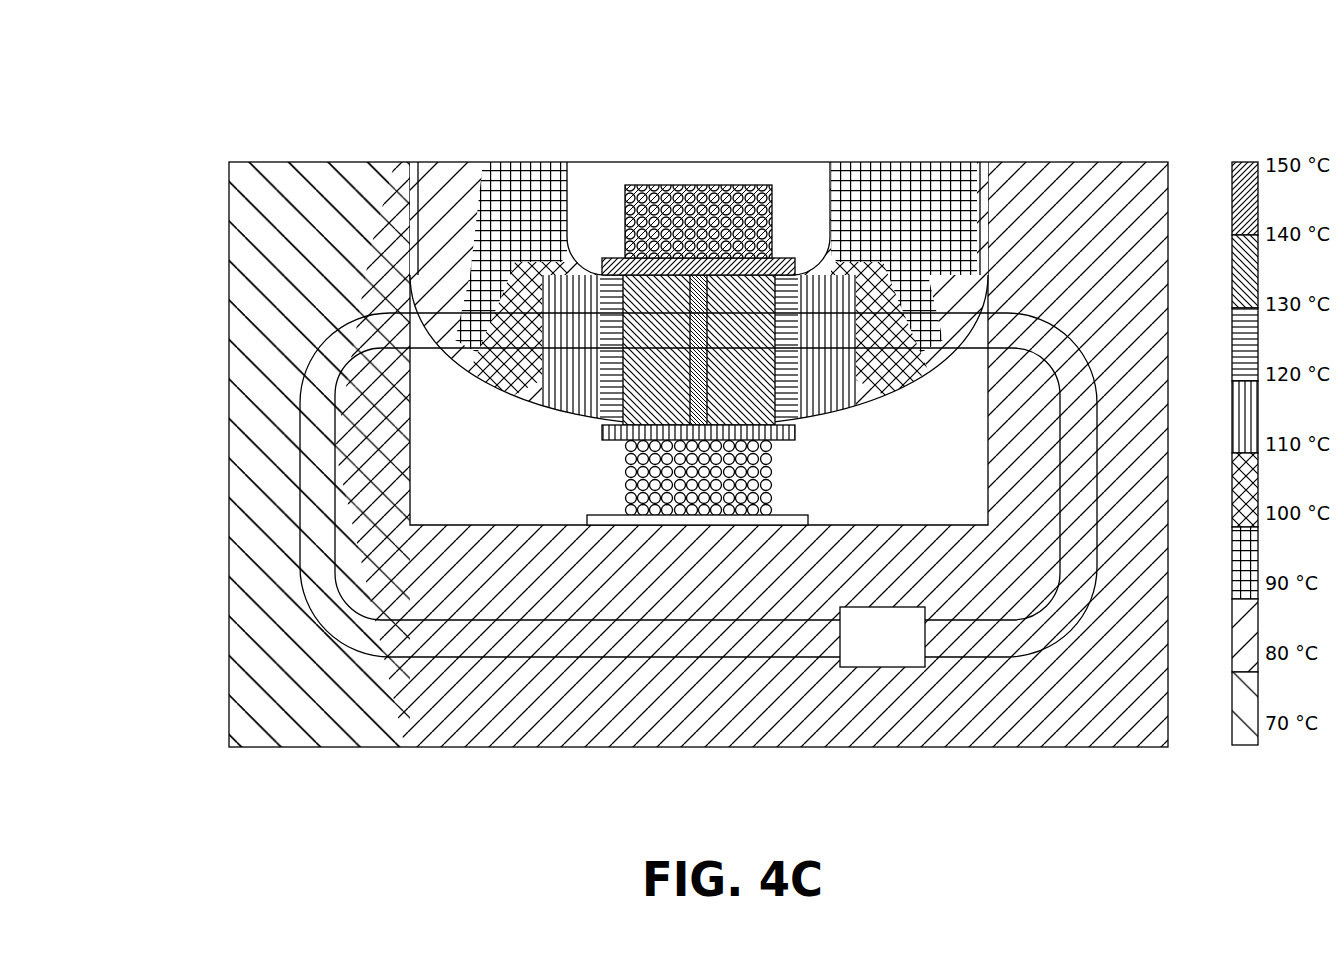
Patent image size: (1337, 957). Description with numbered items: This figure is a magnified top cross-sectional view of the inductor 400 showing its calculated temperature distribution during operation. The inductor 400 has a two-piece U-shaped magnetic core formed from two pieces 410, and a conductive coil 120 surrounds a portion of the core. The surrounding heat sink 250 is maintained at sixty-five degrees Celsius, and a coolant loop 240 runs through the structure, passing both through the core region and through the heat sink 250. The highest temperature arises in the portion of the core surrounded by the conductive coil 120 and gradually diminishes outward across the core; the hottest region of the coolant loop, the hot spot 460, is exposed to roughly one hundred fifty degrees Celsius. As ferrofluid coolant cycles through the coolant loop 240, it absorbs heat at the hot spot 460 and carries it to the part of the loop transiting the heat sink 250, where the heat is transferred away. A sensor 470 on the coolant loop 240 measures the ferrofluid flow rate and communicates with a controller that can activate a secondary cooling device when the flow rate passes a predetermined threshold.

The inductor 400 is at (228, 98).
The heat sink 250 is at (228, 265).
The core pieces 410 is at (482, 160).
The conductive coil 120 is at (697, 180).
The hot spot 460 is at (705, 330).
The coolant loop 240 is at (618, 660).
The sensor 470 is at (885, 668).